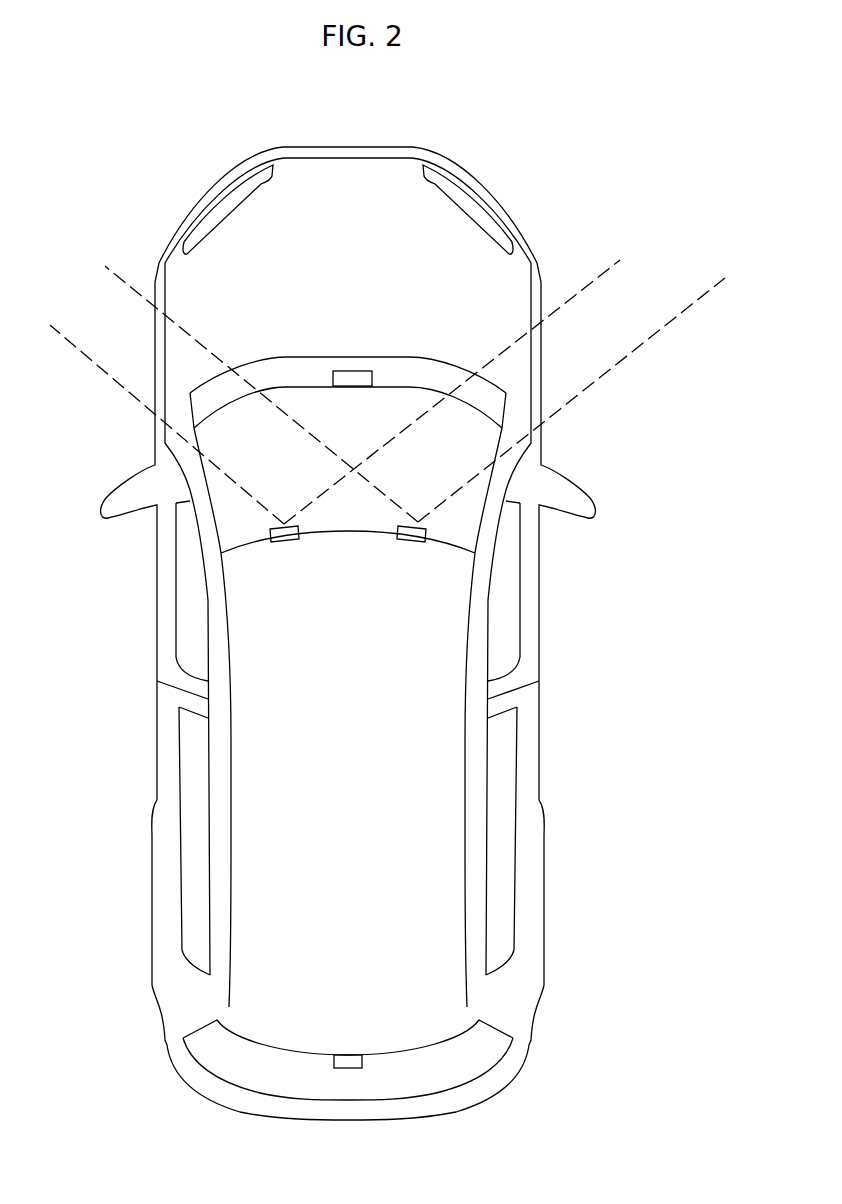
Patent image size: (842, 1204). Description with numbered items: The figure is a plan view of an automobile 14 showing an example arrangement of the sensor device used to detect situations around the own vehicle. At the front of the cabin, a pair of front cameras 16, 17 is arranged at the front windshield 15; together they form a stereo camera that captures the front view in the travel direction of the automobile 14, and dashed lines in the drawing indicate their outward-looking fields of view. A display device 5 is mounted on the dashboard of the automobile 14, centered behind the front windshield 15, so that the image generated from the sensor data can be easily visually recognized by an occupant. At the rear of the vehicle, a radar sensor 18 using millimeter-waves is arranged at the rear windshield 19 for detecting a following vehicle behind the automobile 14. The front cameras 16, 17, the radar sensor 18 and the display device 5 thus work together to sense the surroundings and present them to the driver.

The display device 5 is at (350, 371).
The automobile 14 is at (386, 147).
The front windshield 15 is at (390, 395).
The front camera 16 is at (283, 545).
The front camera 17 is at (415, 545).
The radar sensor 18 is at (347, 1070).
The rear windshield 19 is at (428, 1082).